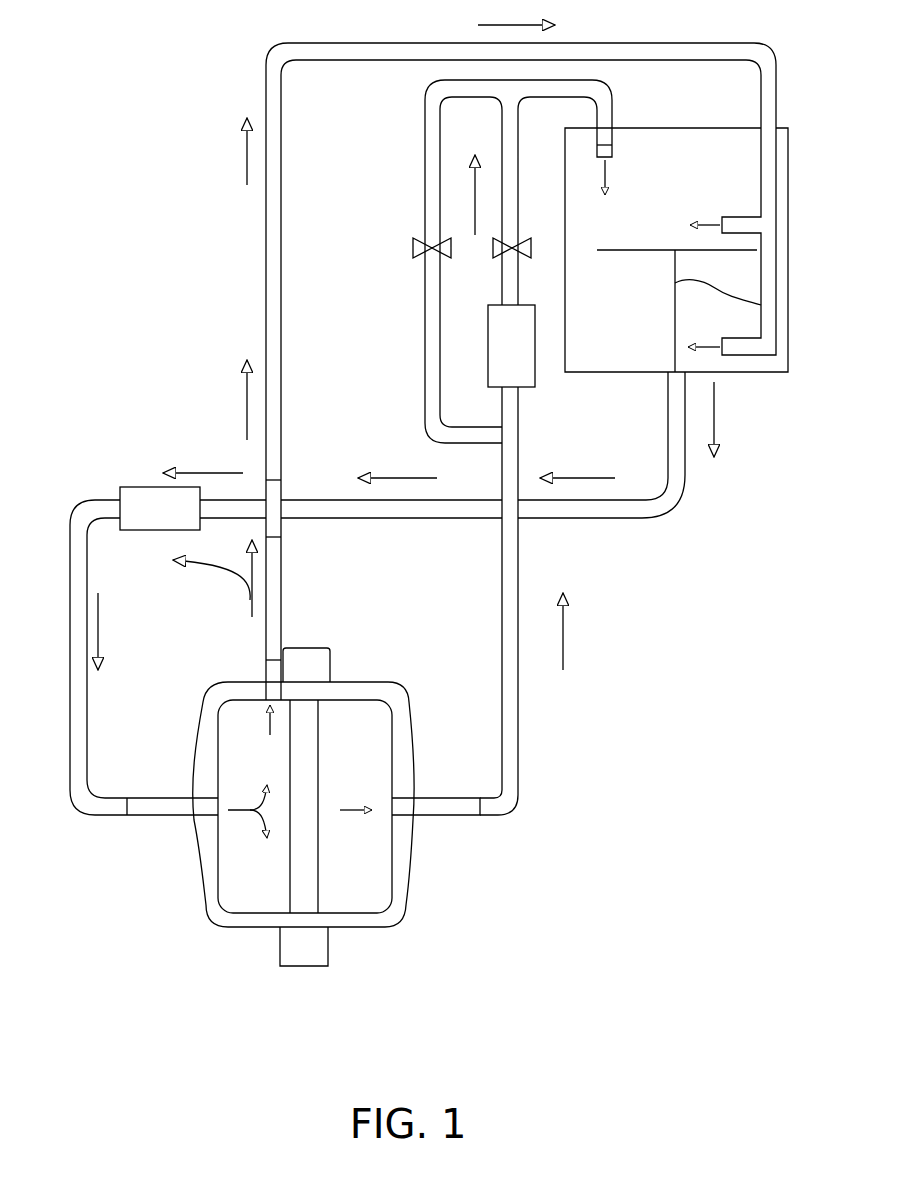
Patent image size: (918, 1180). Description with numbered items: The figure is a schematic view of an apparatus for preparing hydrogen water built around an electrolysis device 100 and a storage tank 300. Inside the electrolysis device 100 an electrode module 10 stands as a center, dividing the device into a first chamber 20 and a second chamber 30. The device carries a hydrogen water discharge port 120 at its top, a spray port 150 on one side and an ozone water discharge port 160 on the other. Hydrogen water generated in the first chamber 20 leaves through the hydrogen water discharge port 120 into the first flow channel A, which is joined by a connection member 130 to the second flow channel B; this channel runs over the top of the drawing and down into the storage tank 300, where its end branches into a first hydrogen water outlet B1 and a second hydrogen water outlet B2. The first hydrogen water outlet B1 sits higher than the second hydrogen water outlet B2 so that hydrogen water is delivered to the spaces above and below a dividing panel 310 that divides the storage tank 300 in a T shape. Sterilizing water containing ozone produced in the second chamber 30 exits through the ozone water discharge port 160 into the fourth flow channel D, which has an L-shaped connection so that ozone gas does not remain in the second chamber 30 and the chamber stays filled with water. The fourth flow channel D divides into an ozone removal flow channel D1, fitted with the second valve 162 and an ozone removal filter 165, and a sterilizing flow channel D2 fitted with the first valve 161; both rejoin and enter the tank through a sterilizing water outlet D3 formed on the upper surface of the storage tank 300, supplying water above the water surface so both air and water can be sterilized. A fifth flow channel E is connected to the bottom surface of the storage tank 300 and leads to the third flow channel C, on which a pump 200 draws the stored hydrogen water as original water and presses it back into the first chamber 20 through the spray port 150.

The electrode module 10 is at (322, 888).
The first chamber 20 is at (238, 864).
The second chamber 30 is at (372, 735).
The electrolysis device 100 is at (405, 900).
The hydrogen water discharge port 120 is at (265, 672).
The connection member 130 is at (280, 483).
The spray port 150 is at (162, 818).
The ozone water discharge port 160 is at (465, 818).
The first valve 161 is at (413, 248).
The second valve 162 is at (512, 252).
The ozone removal filter 165 is at (535, 380).
The pump 200 is at (135, 488).
The storage tank 300 is at (788, 172).
The dividing panel 310 is at (778, 302).
The first flow channel A is at (282, 593).
The second flow channel B is at (680, 45).
The first hydrogen water outlet B1 is at (733, 217).
The second hydrogen water outlet B2 is at (740, 356).
The third flow channel C is at (70, 673).
The fourth flow channel D is at (517, 706).
The ozone removal flow channel D1 is at (502, 150).
The sterilizing flow channel D2 is at (425, 155).
The sterilizing water outlet D3 is at (612, 143).
The fifth flow channel E is at (672, 506).